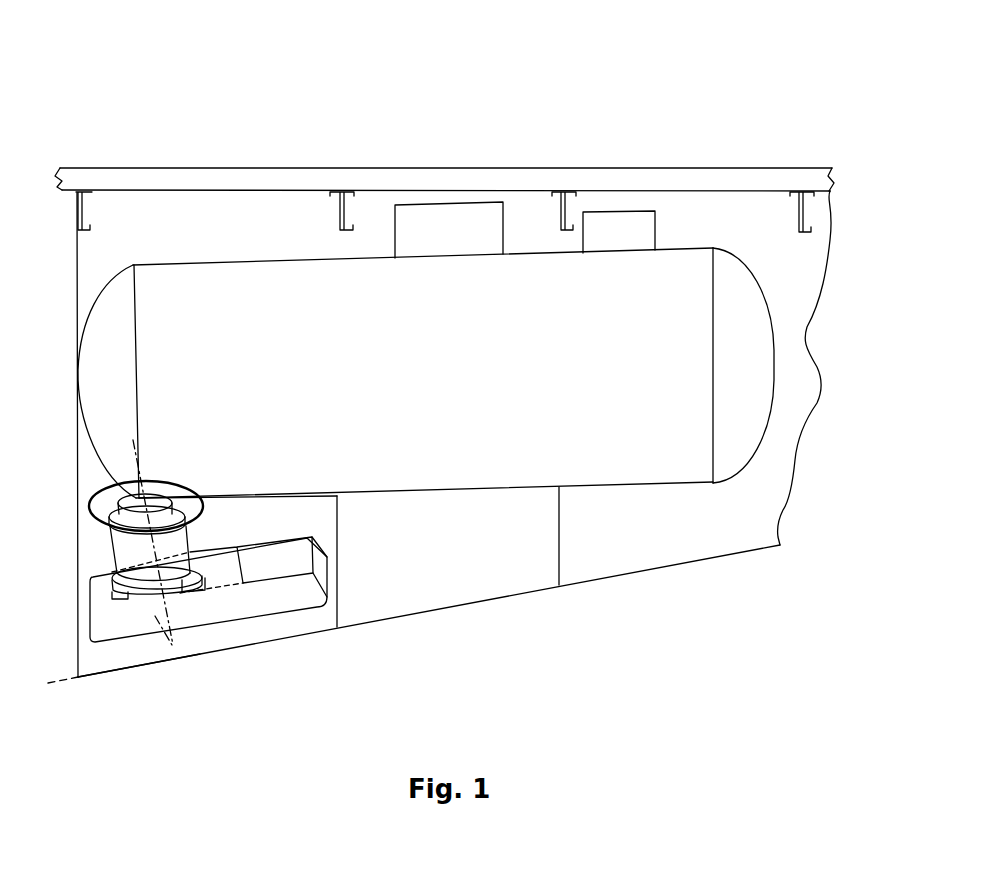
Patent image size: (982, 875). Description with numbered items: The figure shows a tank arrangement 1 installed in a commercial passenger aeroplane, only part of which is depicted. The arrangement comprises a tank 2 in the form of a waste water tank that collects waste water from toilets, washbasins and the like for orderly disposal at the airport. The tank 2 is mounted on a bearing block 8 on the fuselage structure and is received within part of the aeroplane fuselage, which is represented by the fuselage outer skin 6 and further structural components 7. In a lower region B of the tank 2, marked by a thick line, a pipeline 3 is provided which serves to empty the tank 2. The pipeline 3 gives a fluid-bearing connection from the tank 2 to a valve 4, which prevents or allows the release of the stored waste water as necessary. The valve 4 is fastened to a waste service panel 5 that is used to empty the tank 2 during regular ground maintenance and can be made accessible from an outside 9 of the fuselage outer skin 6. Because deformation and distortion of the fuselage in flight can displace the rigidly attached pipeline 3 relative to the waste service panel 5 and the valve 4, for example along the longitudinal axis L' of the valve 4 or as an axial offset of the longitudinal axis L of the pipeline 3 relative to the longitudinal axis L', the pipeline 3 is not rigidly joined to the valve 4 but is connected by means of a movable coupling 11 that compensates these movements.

The tank arrangement 1 is at (634, 97).
The tank 2 is at (260, 307).
The pipeline 3 is at (140, 430).
The valve 4 is at (205, 533).
The waste service panel 5 is at (123, 625).
The fuselage outer skin 6 is at (308, 622).
The structural components 7 is at (343, 212).
The bearing block 8 is at (420, 602).
The outside 9 is at (105, 682).
The movable coupling 11 is at (175, 500).
The lower region B is at (170, 482).
The longitudinal axis of the pipeline L is at (111, 532).
The longitudinal axis of the valve L' is at (172, 737).